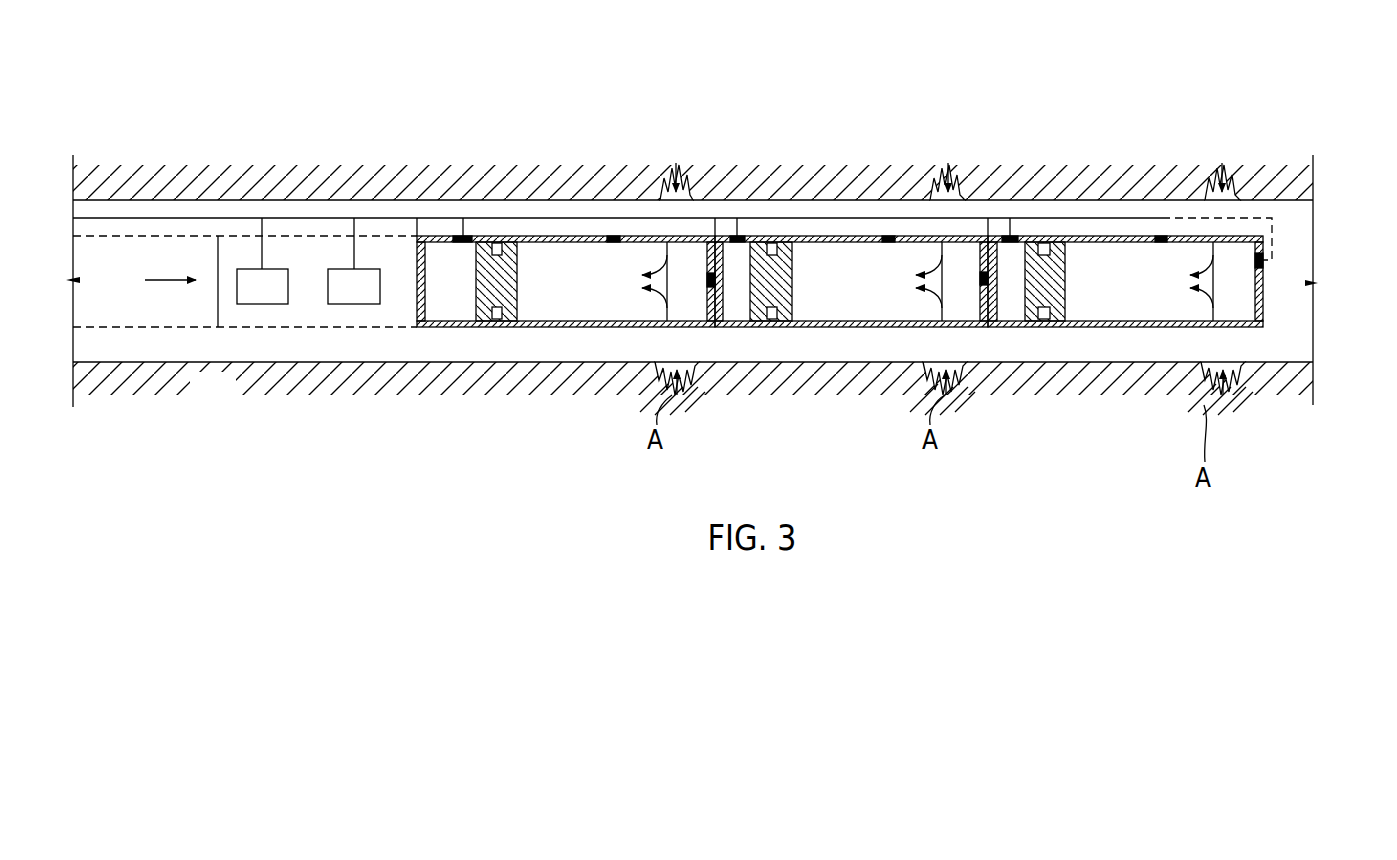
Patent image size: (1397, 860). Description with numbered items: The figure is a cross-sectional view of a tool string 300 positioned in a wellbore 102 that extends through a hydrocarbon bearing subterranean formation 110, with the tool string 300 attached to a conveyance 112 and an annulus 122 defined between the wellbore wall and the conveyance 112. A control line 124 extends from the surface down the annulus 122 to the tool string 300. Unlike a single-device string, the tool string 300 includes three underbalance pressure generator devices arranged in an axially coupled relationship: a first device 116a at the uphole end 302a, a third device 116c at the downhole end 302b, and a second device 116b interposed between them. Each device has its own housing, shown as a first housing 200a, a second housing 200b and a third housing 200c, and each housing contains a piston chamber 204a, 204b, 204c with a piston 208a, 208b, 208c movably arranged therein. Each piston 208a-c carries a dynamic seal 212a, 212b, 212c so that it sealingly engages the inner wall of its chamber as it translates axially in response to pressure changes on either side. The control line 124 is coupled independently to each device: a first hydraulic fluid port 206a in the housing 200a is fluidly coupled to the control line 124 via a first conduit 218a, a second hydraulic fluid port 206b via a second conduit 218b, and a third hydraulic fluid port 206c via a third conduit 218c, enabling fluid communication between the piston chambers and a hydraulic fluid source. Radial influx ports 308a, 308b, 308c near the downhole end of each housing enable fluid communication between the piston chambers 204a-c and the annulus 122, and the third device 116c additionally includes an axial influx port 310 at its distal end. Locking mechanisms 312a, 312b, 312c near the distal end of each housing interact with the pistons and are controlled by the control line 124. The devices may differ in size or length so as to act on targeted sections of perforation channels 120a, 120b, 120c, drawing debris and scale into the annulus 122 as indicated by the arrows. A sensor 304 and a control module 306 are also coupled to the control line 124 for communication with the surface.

The tool string 300 is at (303, 56).
The wellbore 102 is at (108, 362).
The subterranean formation 110 is at (196, 401).
The conveyance 112 is at (158, 236).
The annulus 122 is at (150, 345).
The control line 124 is at (98, 218).
The uphole end 302a is at (131, 280).
The downhole end 302b is at (1276, 341).
The sensor 304 is at (246, 299).
The control module 306 is at (338, 299).
The first housing 200a is at (538, 325).
The second housing 200b is at (812, 325).
The third housing 200c is at (1092, 325).
The first piston chamber 204a is at (554, 296).
The second piston chamber 204b is at (828, 296).
The third piston chamber 204c is at (1101, 296).
The first hydraulic fluid port 206a is at (456, 236).
The second hydraulic fluid port 206b is at (737, 236).
The third hydraulic fluid port 206c is at (1010, 236).
The first piston 208a is at (481, 324).
The second piston 208b is at (756, 324).
The third piston 208c is at (1028, 324).
The first dynamic seal 212a is at (497, 243).
The second dynamic seal 212b is at (772, 243).
The third dynamic seal 212c is at (1044, 243).
The first conduit 218a is at (462, 218).
The second conduit 218b is at (737, 218).
The third conduit 218c is at (1010, 218).
The first radial influx port 308a is at (666, 242).
The second radial influx port 308b is at (942, 242).
The third radial influx port 308c is at (1213, 242).
The first locking mechanism 312a is at (613, 236).
The second locking mechanism 312b is at (888, 236).
The third locking mechanism 312c is at (1161, 236).
The first device 116a is at (462, 334).
The second device 116b is at (736, 334).
The third device 116c is at (1009, 334).
The first perforation channel 120a is at (662, 392).
The second perforation channel 120b is at (952, 385).
The third perforation channel 120c is at (1222, 397).
The axial influx port 310 is at (1242, 295).